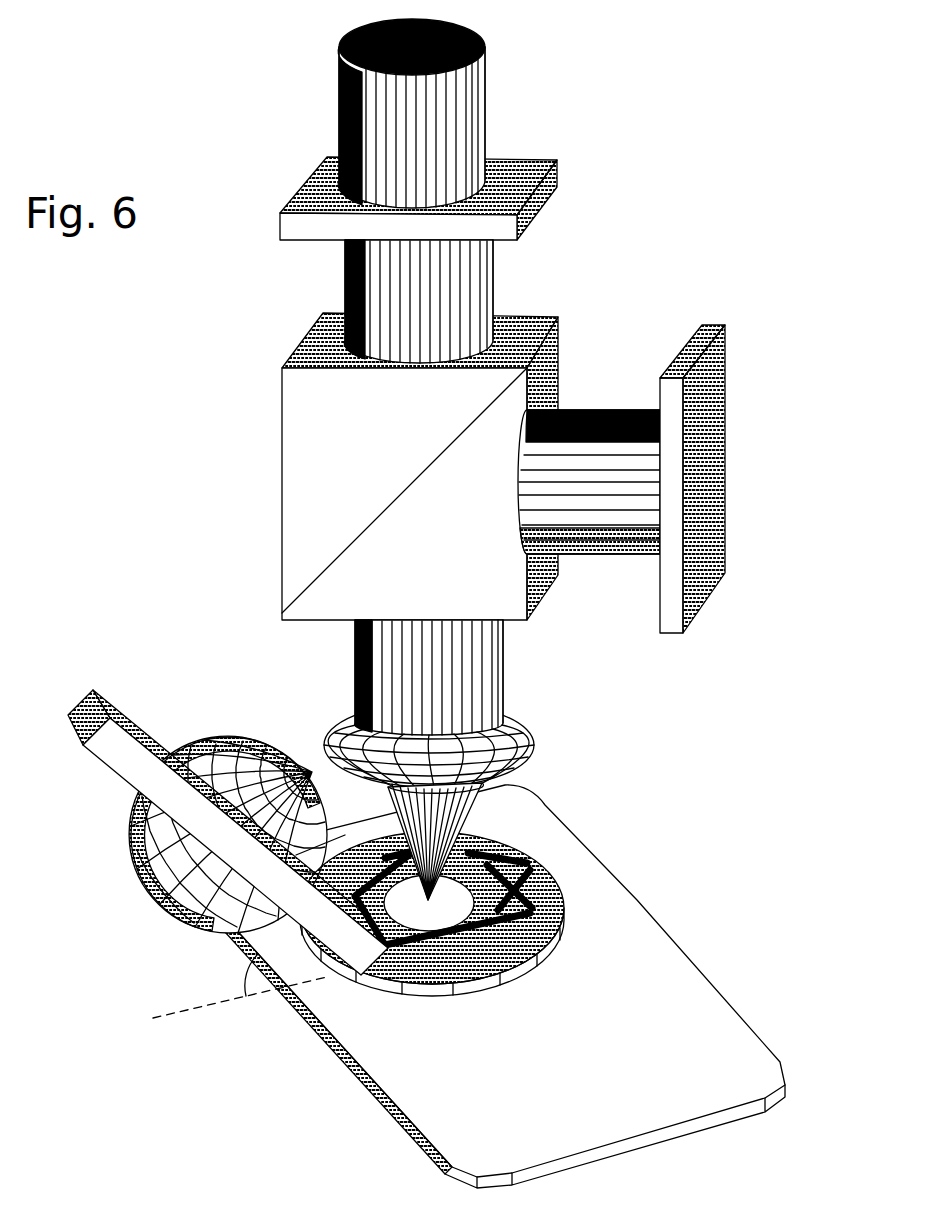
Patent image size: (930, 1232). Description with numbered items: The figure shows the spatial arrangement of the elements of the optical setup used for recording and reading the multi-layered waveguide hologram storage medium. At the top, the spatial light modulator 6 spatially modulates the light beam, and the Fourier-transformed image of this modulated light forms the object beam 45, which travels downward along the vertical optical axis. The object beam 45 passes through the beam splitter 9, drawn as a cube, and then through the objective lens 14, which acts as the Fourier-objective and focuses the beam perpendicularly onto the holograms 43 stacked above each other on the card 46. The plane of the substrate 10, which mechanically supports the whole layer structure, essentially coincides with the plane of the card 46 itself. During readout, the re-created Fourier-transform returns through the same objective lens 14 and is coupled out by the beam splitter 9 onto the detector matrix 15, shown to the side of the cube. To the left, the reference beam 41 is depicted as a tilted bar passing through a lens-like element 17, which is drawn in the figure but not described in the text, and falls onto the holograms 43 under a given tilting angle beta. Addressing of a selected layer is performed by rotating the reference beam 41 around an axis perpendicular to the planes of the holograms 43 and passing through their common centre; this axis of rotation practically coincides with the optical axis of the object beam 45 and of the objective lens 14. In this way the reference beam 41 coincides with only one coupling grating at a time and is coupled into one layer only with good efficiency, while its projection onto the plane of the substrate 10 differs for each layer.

The spatial light modulator 6 is at (560, 190).
The object beam 45 is at (336, 283).
The beam splitter 9 is at (298, 488).
The detector matrix 15 is at (725, 575).
The objective lens 14 is at (534, 745).
The reference beam 41 is at (152, 738).
The condenser lens 17 is at (134, 858).
The holograms 43 is at (517, 835).
The card 46 is at (650, 952).
The substrate 10 is at (338, 1083).